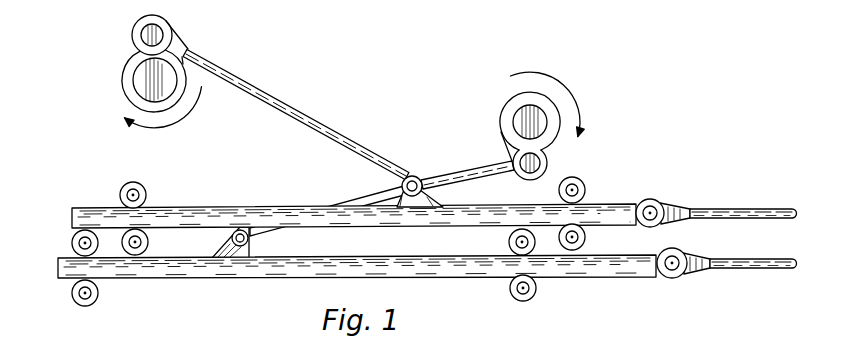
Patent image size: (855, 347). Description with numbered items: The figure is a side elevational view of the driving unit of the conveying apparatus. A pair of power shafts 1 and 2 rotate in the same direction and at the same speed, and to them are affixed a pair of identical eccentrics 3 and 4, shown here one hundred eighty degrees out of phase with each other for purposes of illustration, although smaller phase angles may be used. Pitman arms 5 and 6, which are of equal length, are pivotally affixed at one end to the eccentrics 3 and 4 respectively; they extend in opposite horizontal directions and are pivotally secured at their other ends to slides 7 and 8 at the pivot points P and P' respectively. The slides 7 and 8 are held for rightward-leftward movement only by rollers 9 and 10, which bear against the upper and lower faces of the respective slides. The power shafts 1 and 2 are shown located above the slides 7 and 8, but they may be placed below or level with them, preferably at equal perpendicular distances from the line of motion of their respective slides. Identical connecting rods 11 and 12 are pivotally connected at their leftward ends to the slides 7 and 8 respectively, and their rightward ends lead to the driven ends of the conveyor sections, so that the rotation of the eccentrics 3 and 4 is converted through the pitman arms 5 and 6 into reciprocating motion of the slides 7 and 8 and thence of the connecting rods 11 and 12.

The power shaft 1 is at (143, 79).
The power shaft 2 is at (519, 122).
The eccentric 3 is at (138, 57).
The eccentric 4 is at (507, 110).
The pitman arm 5 is at (281, 109).
The pitman arm 6 is at (453, 171).
The slide 7 is at (263, 213).
The slide 8 is at (302, 274).
The rollers 9 is at (146, 195).
The rollers 10 is at (72, 242).
The connecting rod 11 is at (743, 207).
The connecting rod 12 is at (765, 269).
The pivot point P is at (420, 170).
The pivot point P' is at (310, 243).